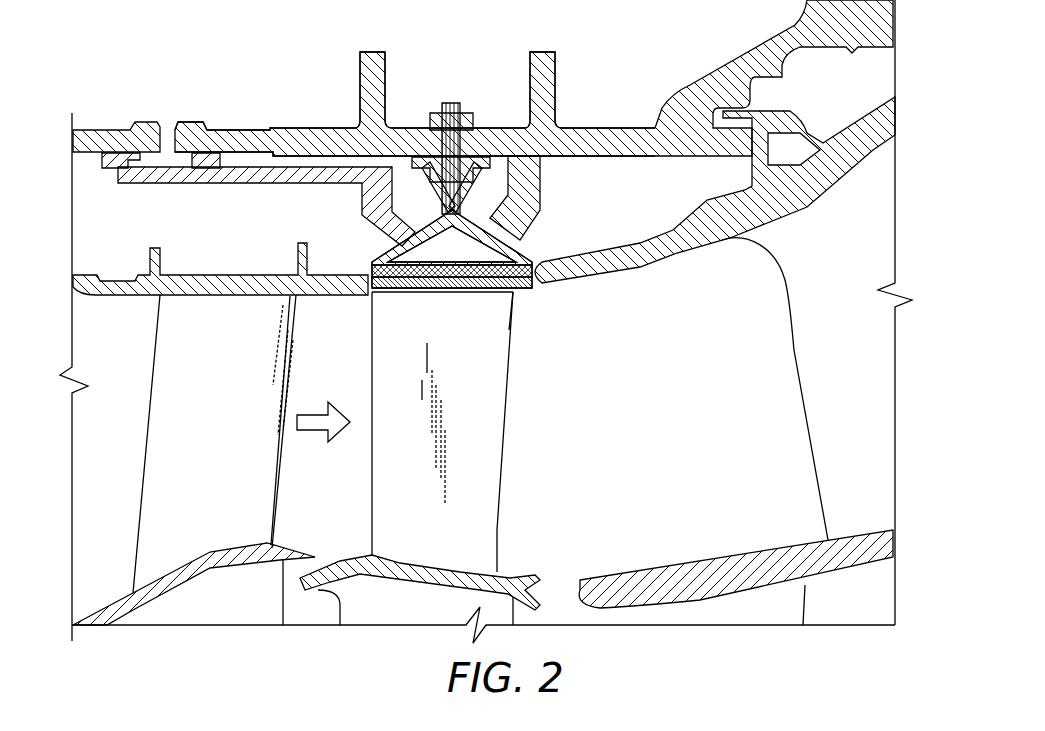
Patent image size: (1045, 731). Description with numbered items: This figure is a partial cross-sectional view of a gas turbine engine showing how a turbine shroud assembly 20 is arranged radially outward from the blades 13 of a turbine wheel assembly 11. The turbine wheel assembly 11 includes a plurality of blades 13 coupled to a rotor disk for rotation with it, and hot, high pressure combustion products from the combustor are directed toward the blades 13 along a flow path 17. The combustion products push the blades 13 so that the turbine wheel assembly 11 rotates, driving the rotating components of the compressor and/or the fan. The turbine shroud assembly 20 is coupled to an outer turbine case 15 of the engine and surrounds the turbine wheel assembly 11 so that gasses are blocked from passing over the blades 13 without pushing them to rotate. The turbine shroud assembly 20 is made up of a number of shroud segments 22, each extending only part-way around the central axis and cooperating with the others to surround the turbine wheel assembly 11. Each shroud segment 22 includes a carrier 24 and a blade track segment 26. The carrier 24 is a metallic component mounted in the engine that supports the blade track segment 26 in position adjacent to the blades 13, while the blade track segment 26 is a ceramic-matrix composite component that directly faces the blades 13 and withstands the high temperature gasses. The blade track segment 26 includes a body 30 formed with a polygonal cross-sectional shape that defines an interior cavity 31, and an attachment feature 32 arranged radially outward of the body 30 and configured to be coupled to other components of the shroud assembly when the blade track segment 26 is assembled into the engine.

The turbine wheel assembly 11 is at (543, 573).
The blades 13 is at (475, 480).
The outer turbine case 15 is at (306, 127).
The flow path 17 is at (313, 442).
The turbine shroud assembly 20 is at (216, 101).
The shroud segment 22 is at (603, 119).
The carrier 24 is at (346, 196).
The blade track segment 26 is at (525, 327).
The body 30 is at (538, 242).
The interior cavity 31 is at (464, 257).
The attachment feature 32 is at (470, 162).